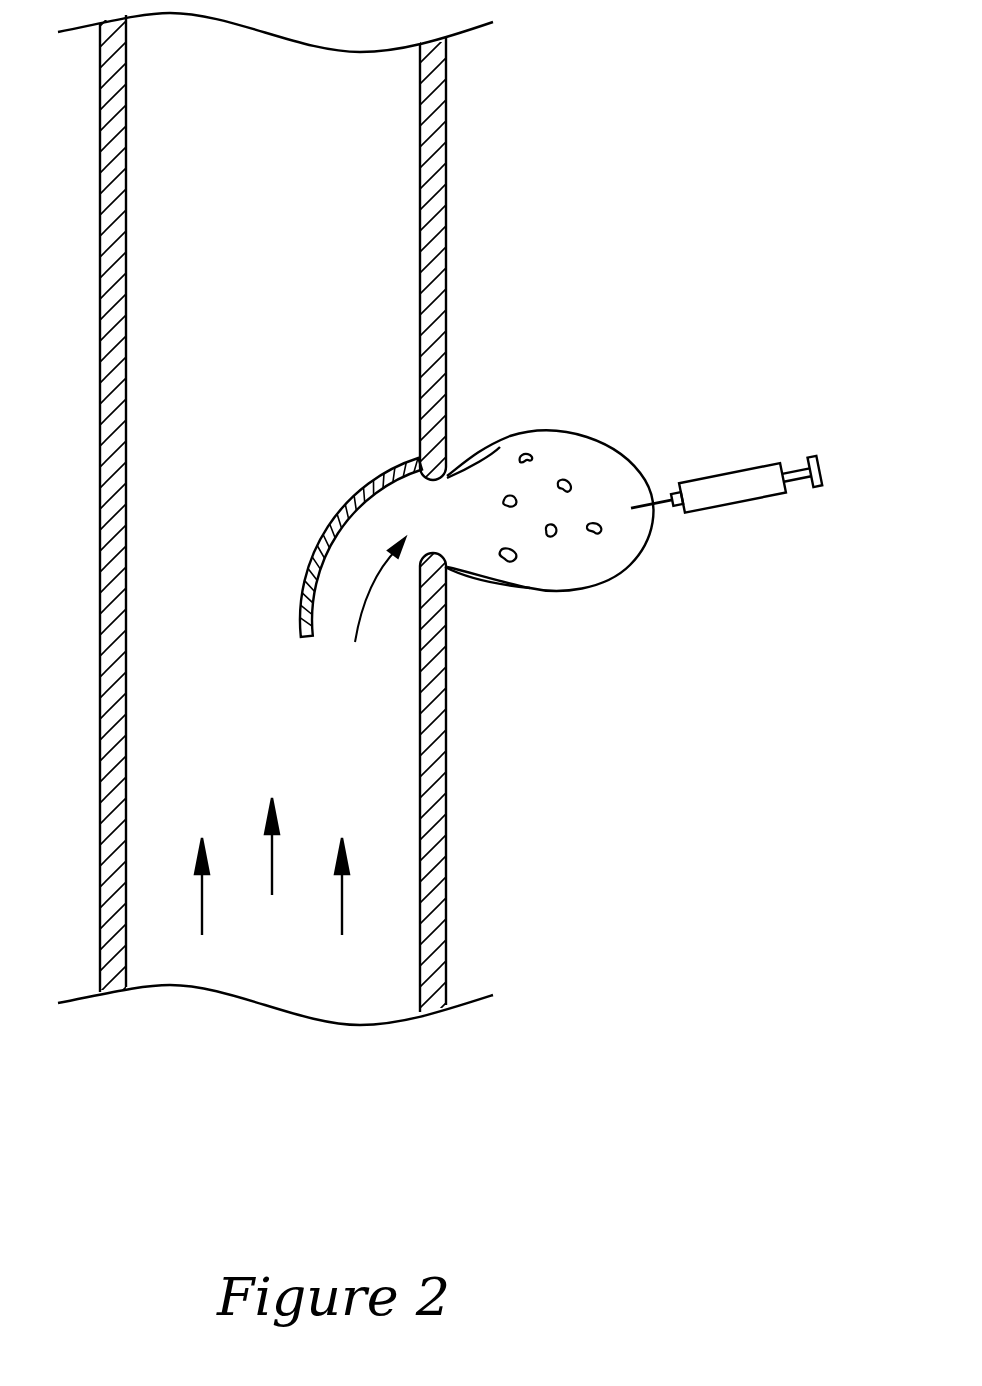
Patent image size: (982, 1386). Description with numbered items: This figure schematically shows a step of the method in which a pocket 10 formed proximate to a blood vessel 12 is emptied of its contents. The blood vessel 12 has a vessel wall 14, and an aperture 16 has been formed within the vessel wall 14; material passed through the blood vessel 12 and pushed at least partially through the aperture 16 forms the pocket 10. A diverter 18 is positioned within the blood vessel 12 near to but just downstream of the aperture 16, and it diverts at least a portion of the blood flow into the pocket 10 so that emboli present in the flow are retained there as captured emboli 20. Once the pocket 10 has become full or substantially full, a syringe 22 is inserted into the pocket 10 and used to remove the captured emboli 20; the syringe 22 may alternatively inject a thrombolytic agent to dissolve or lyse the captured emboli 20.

The pocket 10 is at (617, 458).
The blood vessel 12 is at (487, 193).
The vessel wall 14 is at (446, 698).
The aperture 16 is at (483, 465).
The diverter 18 is at (340, 533).
The captured emboli 20 is at (600, 533).
The syringe 22 is at (735, 503).